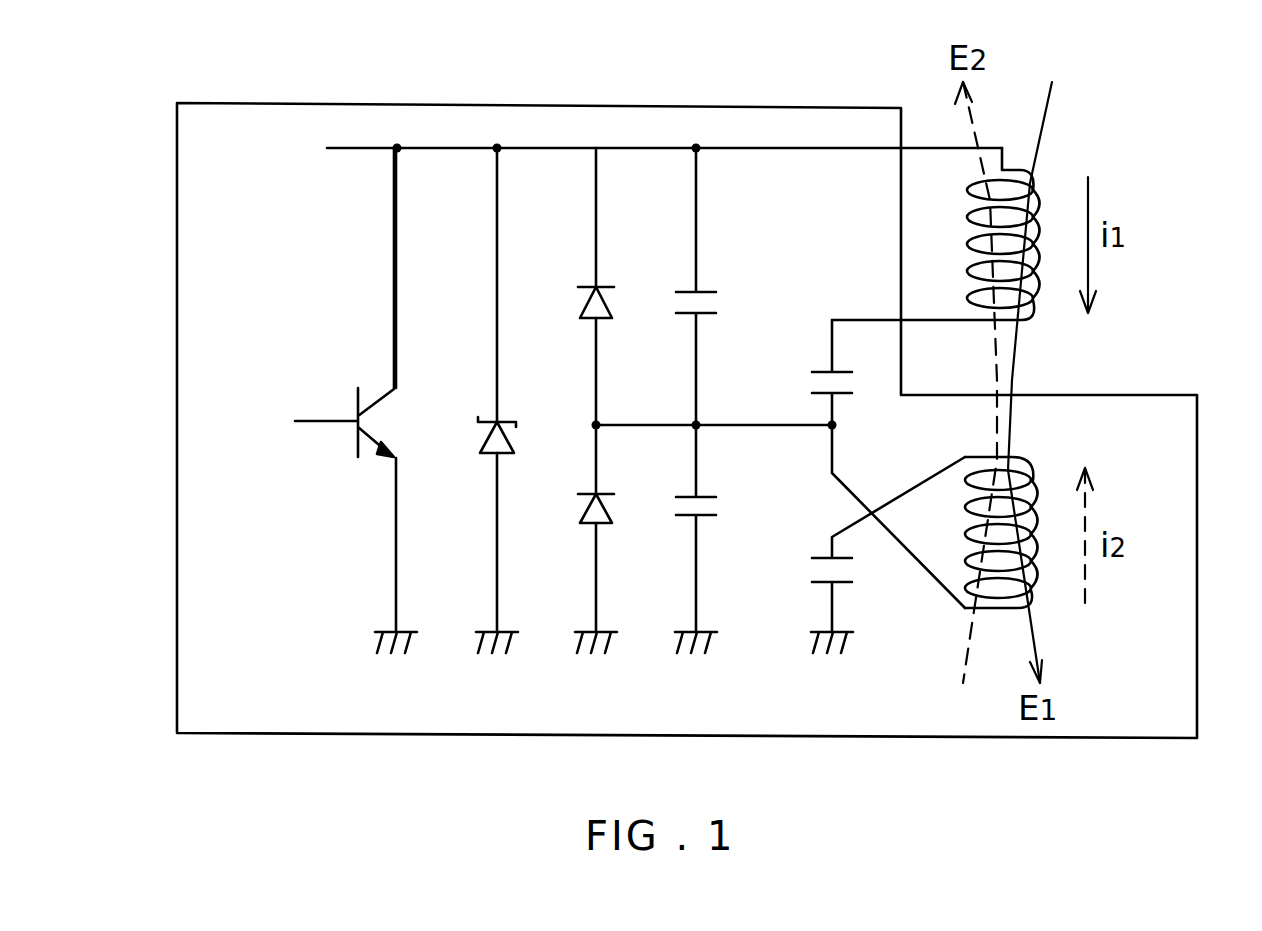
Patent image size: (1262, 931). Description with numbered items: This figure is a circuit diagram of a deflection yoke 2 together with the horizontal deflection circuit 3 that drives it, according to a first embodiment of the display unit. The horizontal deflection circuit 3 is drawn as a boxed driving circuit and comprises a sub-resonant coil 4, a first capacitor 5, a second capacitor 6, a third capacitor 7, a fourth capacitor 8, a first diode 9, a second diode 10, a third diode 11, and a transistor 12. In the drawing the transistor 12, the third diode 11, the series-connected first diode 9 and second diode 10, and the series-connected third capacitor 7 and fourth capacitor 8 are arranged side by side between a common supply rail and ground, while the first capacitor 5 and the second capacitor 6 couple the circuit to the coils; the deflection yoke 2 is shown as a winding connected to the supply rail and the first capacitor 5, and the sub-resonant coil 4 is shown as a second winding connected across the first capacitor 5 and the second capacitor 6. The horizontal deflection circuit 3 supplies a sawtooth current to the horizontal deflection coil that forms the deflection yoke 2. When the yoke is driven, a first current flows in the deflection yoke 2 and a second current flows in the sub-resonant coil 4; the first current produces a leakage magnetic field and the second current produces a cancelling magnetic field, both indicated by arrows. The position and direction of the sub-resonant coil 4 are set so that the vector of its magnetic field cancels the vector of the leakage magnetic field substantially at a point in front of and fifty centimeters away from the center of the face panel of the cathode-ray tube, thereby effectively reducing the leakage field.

The deflection yoke 2 is at (1033, 184).
The horizontal deflection circuit 3 is at (1198, 538).
The sub-resonant coil 4 is at (1025, 600).
The first capacitor 5 is at (828, 372).
The second capacitor 6 is at (828, 558).
The third capacitor 7 is at (700, 292).
The fourth capacitor 8 is at (702, 497).
The first diode 9 is at (598, 288).
The second diode 10 is at (600, 494).
The third diode 11 is at (500, 422).
The transistor 12 is at (375, 392).